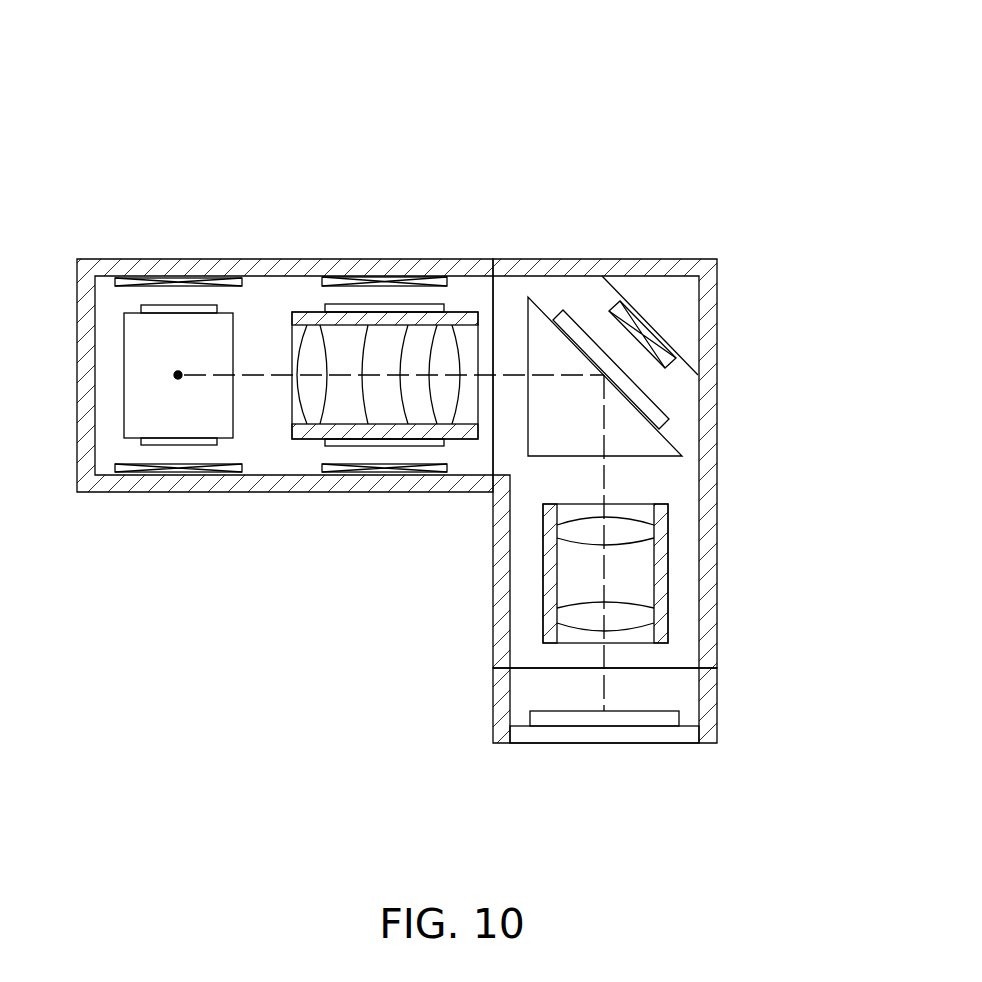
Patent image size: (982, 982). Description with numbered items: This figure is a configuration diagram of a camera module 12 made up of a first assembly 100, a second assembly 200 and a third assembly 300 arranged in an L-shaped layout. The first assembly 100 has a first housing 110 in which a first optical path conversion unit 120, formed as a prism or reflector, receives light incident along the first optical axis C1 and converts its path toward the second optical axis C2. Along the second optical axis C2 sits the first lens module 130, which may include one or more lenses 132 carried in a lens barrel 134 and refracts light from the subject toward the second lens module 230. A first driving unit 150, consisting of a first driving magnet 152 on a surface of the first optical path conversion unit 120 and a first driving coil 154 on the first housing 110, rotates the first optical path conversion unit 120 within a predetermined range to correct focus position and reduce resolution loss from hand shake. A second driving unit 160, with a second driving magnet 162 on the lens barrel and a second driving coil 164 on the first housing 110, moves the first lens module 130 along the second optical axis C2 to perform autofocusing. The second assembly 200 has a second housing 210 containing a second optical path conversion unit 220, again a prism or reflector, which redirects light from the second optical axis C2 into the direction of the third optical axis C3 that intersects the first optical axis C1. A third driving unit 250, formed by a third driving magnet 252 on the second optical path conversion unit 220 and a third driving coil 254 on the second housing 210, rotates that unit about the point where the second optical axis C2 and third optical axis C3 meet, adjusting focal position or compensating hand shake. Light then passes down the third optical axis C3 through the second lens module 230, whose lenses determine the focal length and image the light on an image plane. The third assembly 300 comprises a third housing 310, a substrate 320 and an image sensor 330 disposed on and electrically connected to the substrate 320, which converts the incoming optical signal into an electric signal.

The camera module 12 is at (561, 110).
The first assembly 100 is at (310, 246).
The first housing 110 is at (140, 268).
The first optical path conversion unit 120 is at (220, 310).
The first lens module 130 is at (448, 197).
The lenses 132 is at (445, 343).
The lens barrel 134 is at (362, 318).
The first driving unit 150 is at (150, 556).
The first driving magnet 152 is at (148, 447).
The first driving coil 154 is at (230, 472).
The second driving unit 160 is at (343, 556).
The second driving magnet 162 is at (345, 446).
The second driving coil 164 is at (427, 472).
The first optical axis C1 is at (167, 389).
The second optical axis C2 is at (262, 373).
The second assembly 200 is at (637, 246).
The second housing 210 is at (705, 308).
The second optical path conversion unit 220 is at (535, 325).
The second lens module 230 is at (660, 560).
The third driving unit 250 is at (790, 347).
The third driving magnet 252 is at (645, 408).
The third driving coil 254 is at (665, 357).
The third optical axis C3 is at (605, 660).
The third assembly 300 is at (731, 708).
The third housing 310 is at (705, 730).
The substrate 320 is at (560, 735).
The image sensor 330 is at (648, 720).